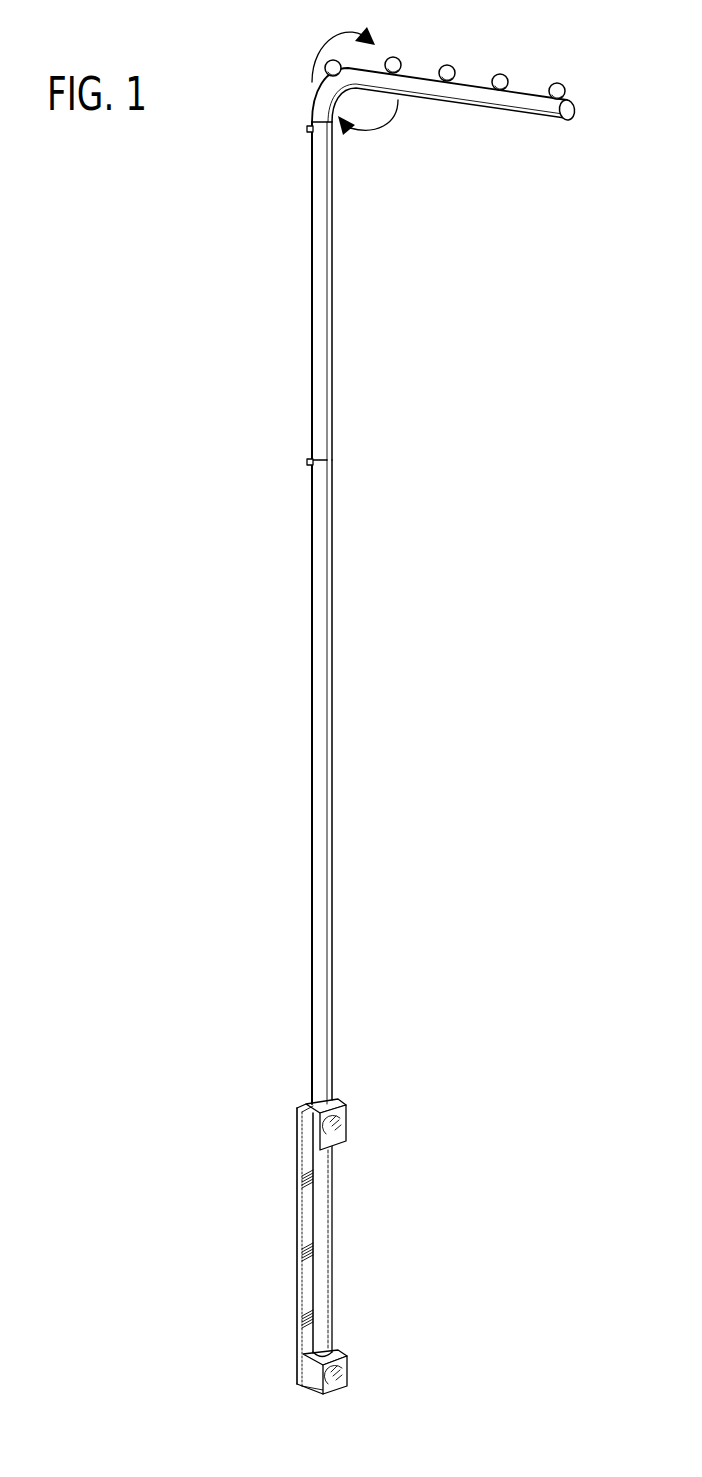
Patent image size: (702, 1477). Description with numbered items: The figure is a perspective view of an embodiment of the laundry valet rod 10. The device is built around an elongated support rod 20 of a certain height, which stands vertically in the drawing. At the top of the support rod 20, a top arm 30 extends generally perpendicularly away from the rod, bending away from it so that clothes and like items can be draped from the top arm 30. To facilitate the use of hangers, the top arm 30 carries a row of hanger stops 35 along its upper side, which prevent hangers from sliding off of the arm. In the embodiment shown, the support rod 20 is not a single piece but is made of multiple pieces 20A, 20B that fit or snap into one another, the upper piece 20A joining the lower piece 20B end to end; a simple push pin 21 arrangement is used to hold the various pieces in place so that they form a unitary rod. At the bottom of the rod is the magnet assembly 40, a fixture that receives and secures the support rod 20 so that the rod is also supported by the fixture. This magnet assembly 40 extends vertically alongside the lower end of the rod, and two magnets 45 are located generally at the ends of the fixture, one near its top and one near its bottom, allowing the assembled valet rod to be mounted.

The display rack assembly 10 is at (273, 207).
The vertical pole 20 is at (318, 498).
The upper pole section 20A is at (323, 315).
The lower pole section 20B is at (325, 623).
The pole joint 21 is at (308, 130).
The horizontal arm 30 is at (534, 104).
The ball stops 35 is at (326, 70).
The mounting bracket 40 is at (307, 1196).
The clamp 45 is at (341, 1130).